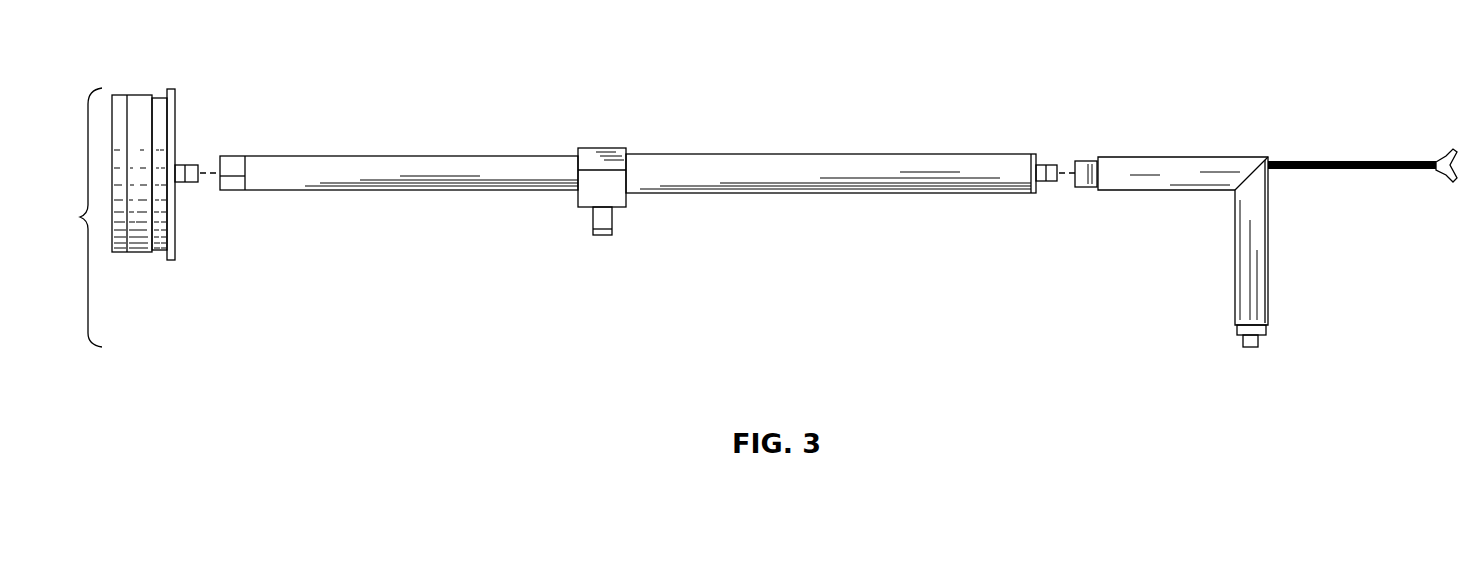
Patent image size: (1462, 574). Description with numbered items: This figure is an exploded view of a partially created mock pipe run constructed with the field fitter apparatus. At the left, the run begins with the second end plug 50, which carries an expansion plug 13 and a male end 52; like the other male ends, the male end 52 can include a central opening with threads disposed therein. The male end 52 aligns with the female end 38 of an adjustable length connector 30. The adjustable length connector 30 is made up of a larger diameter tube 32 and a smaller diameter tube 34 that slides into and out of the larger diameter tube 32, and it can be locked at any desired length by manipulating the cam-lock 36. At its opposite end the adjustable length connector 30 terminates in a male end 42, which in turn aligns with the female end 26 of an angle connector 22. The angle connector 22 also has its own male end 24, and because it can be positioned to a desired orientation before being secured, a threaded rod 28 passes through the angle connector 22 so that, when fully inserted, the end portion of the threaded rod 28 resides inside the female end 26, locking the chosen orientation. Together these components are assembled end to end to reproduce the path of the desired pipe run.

The expansion plug 13 is at (140, 103).
The second end plug 50 is at (170, 262).
The male end 52 is at (183, 163).
The larger diameter tube 32 is at (452, 170).
The female end 38 is at (232, 186).
The cam-lock 36 is at (624, 218).
The smaller diameter tube 34 is at (826, 168).
The adjustable length connector 30 is at (916, 131).
The male end 42 is at (1050, 170).
The female end 26 is at (1085, 183).
The angle connector 22 is at (1143, 170).
The male end 24 is at (1240, 340).
The threaded rod 28 is at (1347, 161).